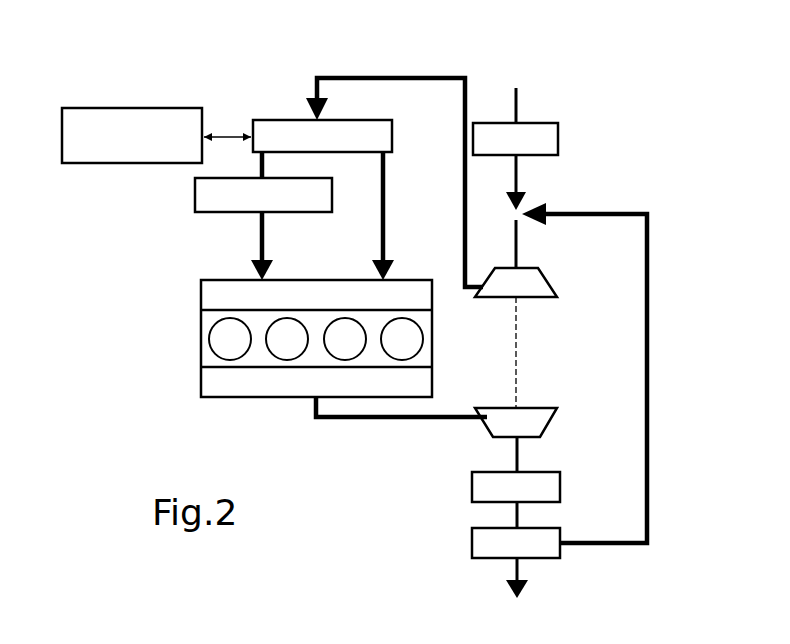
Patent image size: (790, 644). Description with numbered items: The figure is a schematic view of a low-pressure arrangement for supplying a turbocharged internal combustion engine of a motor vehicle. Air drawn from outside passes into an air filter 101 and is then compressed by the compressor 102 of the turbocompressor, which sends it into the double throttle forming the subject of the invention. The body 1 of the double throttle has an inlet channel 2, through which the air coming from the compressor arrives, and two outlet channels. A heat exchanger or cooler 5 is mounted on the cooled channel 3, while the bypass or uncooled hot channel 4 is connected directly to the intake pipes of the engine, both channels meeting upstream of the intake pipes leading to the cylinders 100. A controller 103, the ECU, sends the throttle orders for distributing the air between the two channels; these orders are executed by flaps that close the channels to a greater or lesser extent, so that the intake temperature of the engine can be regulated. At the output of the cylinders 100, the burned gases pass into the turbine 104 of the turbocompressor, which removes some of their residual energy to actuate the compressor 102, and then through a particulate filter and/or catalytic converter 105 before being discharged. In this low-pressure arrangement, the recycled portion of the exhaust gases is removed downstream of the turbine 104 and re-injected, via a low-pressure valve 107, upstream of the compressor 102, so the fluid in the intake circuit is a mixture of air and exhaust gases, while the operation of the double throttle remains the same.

The body of the double throttle 1 is at (393, 133).
The inlet channel 2 is at (310, 89).
The cooled channel 3 is at (250, 165).
The bypass channel 4 is at (393, 193).
The heat exchanger 5 is at (195, 192).
The cylinders 100 is at (201, 338).
The air filter 101 is at (560, 140).
The compressor 102 is at (548, 285).
The controller 103 is at (106, 108).
The turbine 104 is at (558, 420).
The catalytic converter 105 is at (472, 480).
The low-pressure valve 107 is at (472, 540).